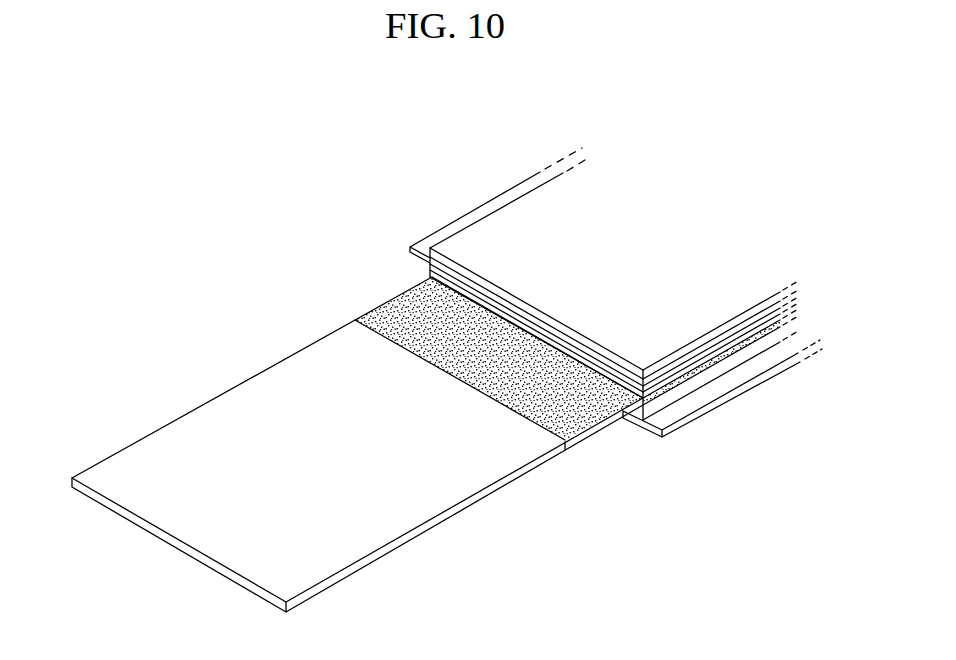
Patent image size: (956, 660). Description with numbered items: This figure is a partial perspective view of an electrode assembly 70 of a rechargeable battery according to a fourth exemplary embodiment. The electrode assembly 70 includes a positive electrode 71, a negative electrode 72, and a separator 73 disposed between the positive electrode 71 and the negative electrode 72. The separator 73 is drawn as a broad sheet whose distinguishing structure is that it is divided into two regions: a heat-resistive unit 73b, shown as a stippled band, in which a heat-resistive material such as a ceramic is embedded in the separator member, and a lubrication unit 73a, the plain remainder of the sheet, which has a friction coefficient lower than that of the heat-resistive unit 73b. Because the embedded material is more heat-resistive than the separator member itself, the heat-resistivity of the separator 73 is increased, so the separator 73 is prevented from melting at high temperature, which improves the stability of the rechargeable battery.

The electrode assembly 70 is at (290, 181).
The positive electrode 71 is at (628, 426).
The negative electrode 72 is at (508, 218).
The separator 73 is at (298, 328).
The lubrication unit 73a is at (230, 398).
The heat-resistive unit 73b is at (393, 307).